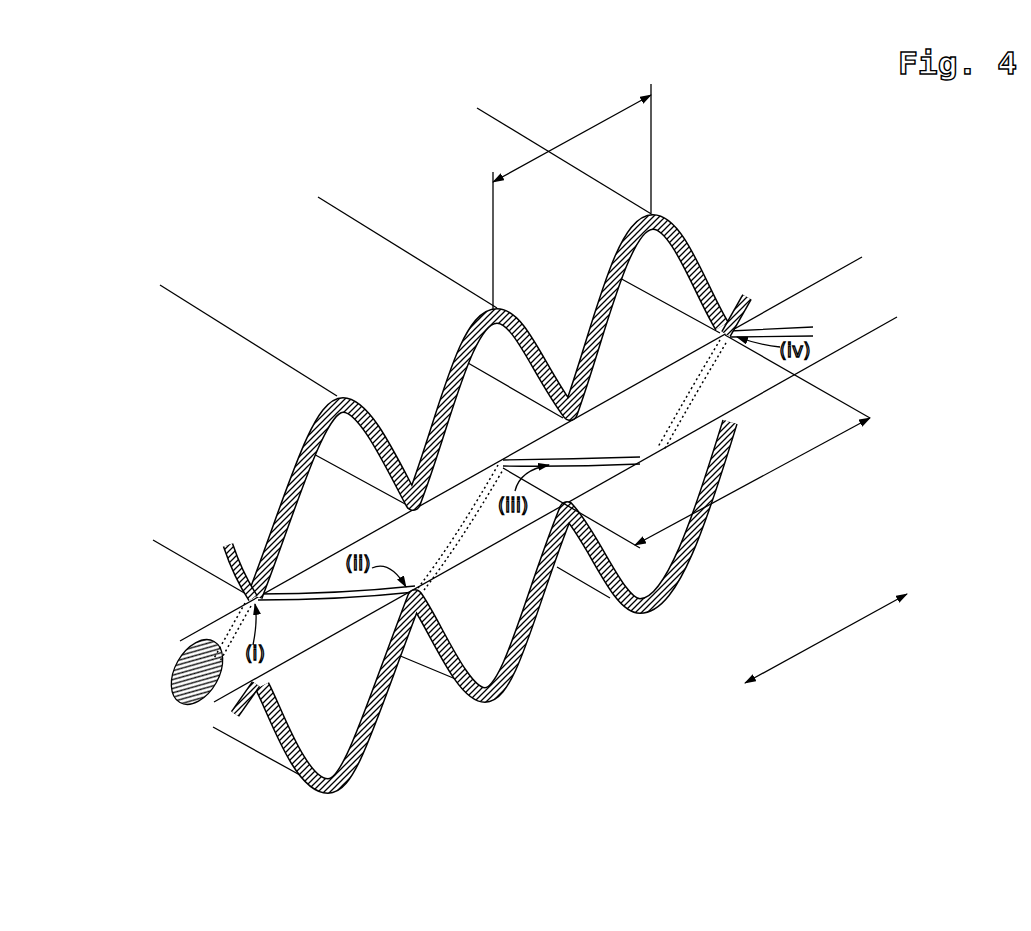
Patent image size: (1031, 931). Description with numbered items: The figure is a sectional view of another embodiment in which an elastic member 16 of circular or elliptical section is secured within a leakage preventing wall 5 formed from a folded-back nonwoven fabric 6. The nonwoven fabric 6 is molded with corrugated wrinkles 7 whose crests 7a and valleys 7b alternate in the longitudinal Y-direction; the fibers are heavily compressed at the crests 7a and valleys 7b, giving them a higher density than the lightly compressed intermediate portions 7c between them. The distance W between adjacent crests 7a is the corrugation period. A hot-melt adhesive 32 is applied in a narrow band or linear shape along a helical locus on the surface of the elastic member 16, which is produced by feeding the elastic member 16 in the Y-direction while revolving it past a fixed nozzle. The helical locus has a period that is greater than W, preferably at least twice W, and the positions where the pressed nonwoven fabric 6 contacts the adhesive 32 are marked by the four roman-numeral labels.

The leakage preventing wall 5 is at (895, 399).
The nonwoven fabric 6 is at (166, 565).
The corrugated wrinkles 7 is at (326, 277).
The crest 7a is at (653, 213).
The valley 7b is at (570, 420).
The intermediate portion 7c is at (593, 318).
The elastic member 16 is at (877, 328).
The hot-melt adhesive 32 is at (317, 598).